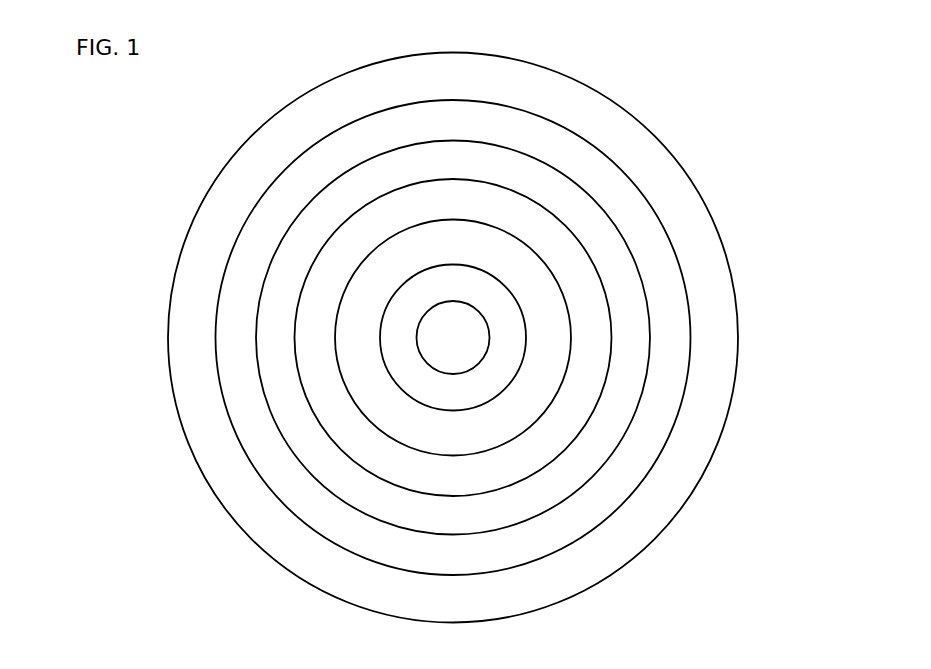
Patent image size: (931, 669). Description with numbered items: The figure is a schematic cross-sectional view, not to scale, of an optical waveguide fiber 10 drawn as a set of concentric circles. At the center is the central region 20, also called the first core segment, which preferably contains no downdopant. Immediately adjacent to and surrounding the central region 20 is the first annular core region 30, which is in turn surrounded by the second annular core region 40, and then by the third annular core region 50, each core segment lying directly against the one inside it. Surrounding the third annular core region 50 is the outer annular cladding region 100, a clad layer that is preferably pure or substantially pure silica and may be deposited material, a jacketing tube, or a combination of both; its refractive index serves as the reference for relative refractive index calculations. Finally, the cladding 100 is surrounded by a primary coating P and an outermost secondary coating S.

The optical waveguide fiber 10 is at (427, 338).
The central region 20 is at (457, 343).
The first annular core region 30 is at (502, 352).
The second annular core region 40 is at (562, 343).
The third annular core region 50 is at (597, 317).
The outer annular cladding region 100 is at (609, 261).
The primary coating P is at (631, 219).
The secondary coating S is at (641, 144).